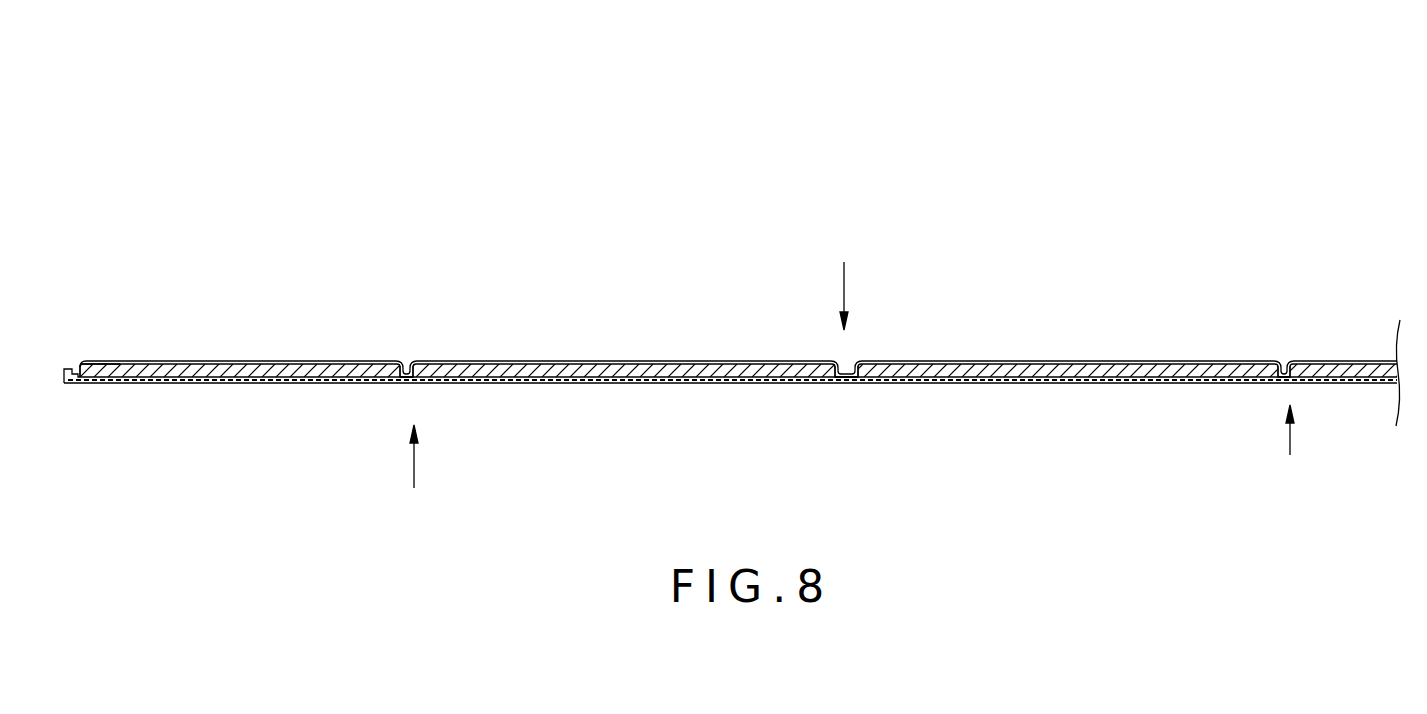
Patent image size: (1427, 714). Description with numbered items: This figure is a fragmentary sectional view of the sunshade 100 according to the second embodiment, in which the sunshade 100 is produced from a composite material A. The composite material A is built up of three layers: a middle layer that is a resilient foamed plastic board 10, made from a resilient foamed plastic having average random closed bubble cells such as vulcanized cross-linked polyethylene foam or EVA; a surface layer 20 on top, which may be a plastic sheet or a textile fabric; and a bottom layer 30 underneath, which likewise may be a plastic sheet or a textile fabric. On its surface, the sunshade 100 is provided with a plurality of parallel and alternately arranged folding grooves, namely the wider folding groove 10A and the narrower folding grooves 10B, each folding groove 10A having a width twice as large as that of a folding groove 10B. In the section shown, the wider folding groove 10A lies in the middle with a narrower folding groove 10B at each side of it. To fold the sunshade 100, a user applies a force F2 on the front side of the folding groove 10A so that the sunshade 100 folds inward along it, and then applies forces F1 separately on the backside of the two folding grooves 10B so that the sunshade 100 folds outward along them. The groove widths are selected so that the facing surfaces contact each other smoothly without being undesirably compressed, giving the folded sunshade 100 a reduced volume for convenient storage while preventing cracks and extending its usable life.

The sunshade 100 is at (1021, 130).
The resilient foamed plastic board 10 is at (562, 382).
The folding groove 10A is at (850, 363).
The folding groove 10B is at (407, 362).
The surface layer 20 is at (637, 362).
The bottom layer 30 is at (708, 383).
The composite material A is at (131, 340).
The force F1 is at (853, 469).
The force F2 is at (842, 281).